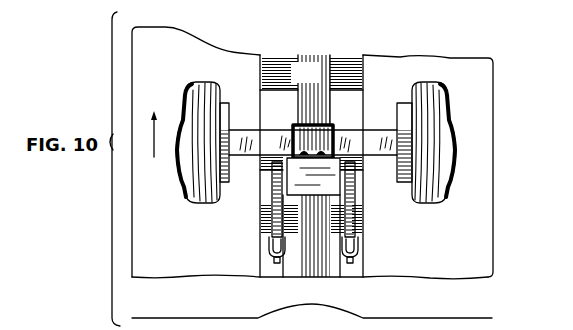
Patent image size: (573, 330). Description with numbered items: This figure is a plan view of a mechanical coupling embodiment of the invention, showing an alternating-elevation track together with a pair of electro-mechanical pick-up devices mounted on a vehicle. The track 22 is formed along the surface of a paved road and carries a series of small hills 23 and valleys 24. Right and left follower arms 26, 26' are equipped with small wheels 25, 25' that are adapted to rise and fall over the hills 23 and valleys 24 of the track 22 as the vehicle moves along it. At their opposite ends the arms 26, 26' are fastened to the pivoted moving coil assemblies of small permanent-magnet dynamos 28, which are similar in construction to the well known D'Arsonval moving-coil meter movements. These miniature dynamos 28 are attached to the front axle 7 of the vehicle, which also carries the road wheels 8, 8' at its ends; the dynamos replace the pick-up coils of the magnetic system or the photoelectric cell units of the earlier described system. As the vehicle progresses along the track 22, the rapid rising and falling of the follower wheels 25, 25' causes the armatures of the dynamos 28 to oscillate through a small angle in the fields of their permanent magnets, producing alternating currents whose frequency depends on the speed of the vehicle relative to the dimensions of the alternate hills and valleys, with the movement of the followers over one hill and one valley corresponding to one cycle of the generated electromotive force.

The front axle 7 is at (372, 132).
The wheel 8 is at (429, 139).
The wheel 8' is at (198, 137).
The track 22 is at (240, 306).
The hills 23 is at (358, 226).
The valleys 24 is at (280, 104).
The wheel 25 is at (371, 256).
The wheel 25' is at (257, 254).
The follower arm 26 is at (371, 199).
The follower arm 26' is at (254, 199).
The permanent-magnet dynamo 28 is at (290, 186).